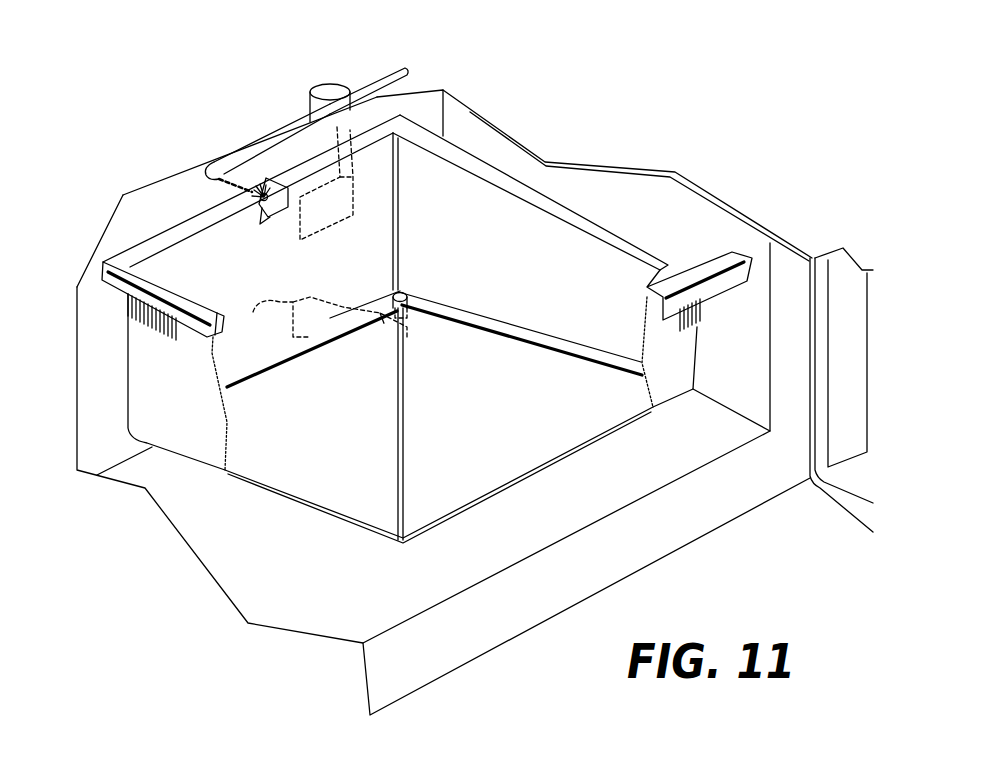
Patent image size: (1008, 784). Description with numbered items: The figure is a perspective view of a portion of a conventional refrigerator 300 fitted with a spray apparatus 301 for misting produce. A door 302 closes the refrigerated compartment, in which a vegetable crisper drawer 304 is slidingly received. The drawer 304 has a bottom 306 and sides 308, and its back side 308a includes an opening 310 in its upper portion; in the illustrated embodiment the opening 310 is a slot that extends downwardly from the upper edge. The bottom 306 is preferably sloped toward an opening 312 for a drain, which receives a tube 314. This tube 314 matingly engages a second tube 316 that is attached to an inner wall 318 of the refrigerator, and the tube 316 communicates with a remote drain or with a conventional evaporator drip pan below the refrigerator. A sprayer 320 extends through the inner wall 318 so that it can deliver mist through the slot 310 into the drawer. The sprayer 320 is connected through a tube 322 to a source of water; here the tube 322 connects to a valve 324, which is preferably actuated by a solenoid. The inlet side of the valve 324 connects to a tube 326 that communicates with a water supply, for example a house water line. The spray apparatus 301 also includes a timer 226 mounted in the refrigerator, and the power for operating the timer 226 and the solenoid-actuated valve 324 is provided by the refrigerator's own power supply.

The refrigerator 300 is at (147, 520).
The spray apparatus 301 is at (280, 100).
The door 302 is at (843, 493).
The vegetable crisper drawer 304 is at (160, 397).
The bottom 306 is at (506, 424).
The sides 308 is at (506, 268).
The back side 308a is at (238, 285).
The opening 310 is at (270, 218).
The opening 312 is at (405, 292).
The tube 314 is at (410, 323).
The second tube 316 is at (321, 319).
The inner wall 318 is at (130, 225).
The sprayer 320 is at (247, 197).
The tube 322 is at (258, 142).
The valve 324 is at (330, 88).
The tube 326 is at (377, 76).
The timer 226 is at (343, 220).